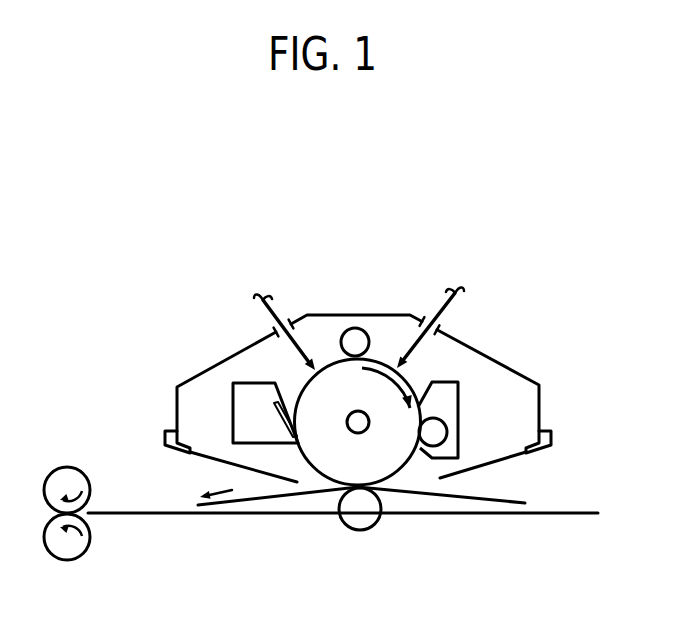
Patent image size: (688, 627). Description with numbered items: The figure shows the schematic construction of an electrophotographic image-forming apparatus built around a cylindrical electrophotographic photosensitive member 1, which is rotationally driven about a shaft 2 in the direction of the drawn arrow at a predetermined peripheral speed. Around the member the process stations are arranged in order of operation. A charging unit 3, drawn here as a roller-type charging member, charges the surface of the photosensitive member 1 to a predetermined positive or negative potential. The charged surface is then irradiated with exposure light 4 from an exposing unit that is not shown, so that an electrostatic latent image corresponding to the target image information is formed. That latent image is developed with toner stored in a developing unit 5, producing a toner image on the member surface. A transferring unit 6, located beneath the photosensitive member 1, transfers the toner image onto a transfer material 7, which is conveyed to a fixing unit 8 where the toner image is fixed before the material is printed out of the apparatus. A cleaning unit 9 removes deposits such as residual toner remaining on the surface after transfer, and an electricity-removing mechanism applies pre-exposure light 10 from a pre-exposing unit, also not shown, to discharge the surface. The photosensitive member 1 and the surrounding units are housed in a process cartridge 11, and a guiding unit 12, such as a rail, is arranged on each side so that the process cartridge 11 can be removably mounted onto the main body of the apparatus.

The electrophotographic photosensitive member 1 is at (298, 390).
The shaft 2 is at (359, 433).
The charging unit 3 is at (341, 343).
The exposure light 4 is at (441, 293).
The developing unit 5 is at (440, 382).
The transferring unit 6 is at (361, 531).
The transfer material 7 is at (483, 500).
The fixing unit 8 is at (65, 467).
The cleaning unit 9 is at (247, 383).
The pre-exposure light 10 is at (273, 297).
The process cartridge 11 is at (498, 357).
The guiding unit 12 is at (165, 431).